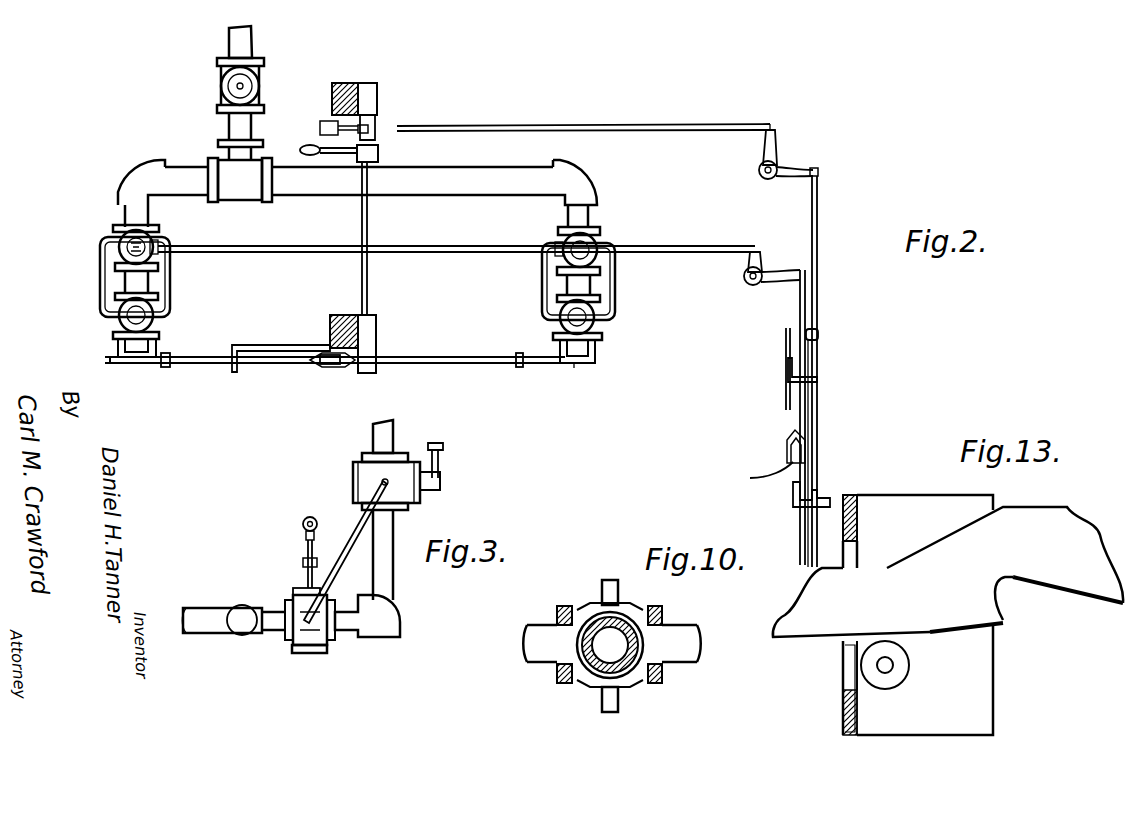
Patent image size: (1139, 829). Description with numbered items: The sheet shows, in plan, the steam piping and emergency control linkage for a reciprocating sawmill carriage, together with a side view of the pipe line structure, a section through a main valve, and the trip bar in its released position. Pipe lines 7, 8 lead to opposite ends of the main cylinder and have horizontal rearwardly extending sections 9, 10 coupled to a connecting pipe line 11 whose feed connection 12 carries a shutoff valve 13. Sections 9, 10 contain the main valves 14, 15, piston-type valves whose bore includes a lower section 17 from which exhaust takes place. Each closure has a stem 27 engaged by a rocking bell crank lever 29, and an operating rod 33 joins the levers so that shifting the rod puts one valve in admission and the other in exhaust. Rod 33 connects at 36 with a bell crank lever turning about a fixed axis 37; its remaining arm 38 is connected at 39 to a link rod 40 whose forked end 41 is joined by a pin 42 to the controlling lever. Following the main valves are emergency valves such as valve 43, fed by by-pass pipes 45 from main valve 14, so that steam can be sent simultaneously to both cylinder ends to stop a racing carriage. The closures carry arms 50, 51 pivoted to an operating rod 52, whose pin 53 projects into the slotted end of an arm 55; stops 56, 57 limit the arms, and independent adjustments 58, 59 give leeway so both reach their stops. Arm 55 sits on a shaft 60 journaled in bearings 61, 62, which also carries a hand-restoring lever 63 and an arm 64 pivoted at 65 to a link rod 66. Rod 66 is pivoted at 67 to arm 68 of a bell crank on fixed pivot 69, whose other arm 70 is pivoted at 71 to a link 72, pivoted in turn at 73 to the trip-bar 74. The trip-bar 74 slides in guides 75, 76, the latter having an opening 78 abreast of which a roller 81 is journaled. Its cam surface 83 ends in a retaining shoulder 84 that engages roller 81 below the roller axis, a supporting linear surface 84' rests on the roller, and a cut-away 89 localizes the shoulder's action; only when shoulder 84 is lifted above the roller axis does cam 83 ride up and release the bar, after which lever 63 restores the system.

In FIG. 2, the pipe line 7 is at (118, 318).
In FIG. 3, the pipe line 7 is at (395, 433).
In FIG. 2, the pipe line 8 is at (600, 325).
In FIG. 2, the horizontal rearwardly extending section 9 is at (128, 212).
In FIG. 3, the horizontal rearwardly extending section 9 is at (273, 628).
In FIG. 10, the horizontal rearwardly extending section 9 is at (540, 648).
In FIG. 2, the horizontal rearwardly extending section 10 is at (590, 220).
In FIG. 3, the connecting pipe line 11 is at (248, 630).
In FIG. 2, the feed connection 12 is at (240, 125).
In FIG. 3, the feed connection 12 is at (212, 612).
In FIG. 2, the shutoff valve 13 is at (251, 90).
In FIG. 2, the main valve 14 is at (110, 247).
In FIG. 3, the main valve 14 is at (312, 653).
In FIG. 10, the main valve 14 is at (578, 678).
In FIG. 2, the main valve 15 is at (600, 242).
In FIG. 2, the lower section of cylindrical bore 17 is at (490, 162).
In FIG. 3, the valve stem 27 is at (306, 580).
In FIG. 3, the rocking bell crank lever 29 is at (305, 560).
In FIG. 2, the operating rod 33 is at (490, 244).
In FIG. 3, the operating rod 33 is at (303, 522).
In FIG. 2, the connection of rod 33 to bell crank lever 36 is at (755, 252).
In FIG. 2, the fixed axis 37 is at (745, 282).
In FIG. 2, the remaining arm of bell crank lever 38 is at (778, 283).
In FIG. 2, the connection of arm 38 to link 40 39 is at (805, 272).
In FIG. 2, the link rod 40 is at (796, 312).
In FIG. 2, the forked end 41 is at (788, 448).
In FIG. 2, the pin 42 is at (750, 478).
In FIG. 3, the emergency valve 43 is at (353, 473).
In FIG. 2, the by-pass pipe 45 is at (100, 290).
In FIG. 3, the by-pass pipe 45 is at (360, 510).
In FIG. 10, the by-pass pipe 45 is at (620, 592).
In FIG. 2, the arm 50 is at (108, 350).
In FIG. 3, the arm 50 is at (448, 468).
In FIG. 2, the arm 51 is at (576, 364).
In FIG. 2, the operating rod 52 is at (305, 364).
In FIG. 3, the operating rod 52 is at (440, 445).
In FIG. 2, the pin 53 is at (330, 366).
In FIG. 2, the arm 55 is at (332, 363).
In FIG. 2, the stop 56 is at (112, 342).
In FIG. 2, the stop 57 is at (552, 348).
In FIG. 2, the independent adjustment 58 is at (164, 367).
In FIG. 2, the independent adjustment 59 is at (512, 373).
In FIG. 2, the shaft 60 is at (368, 298).
In FIG. 2, the bearing 61 is at (378, 328).
In FIG. 2, the bearing 62 is at (378, 98).
In FIG. 2, the hand-restoring lever 63 is at (342, 155).
In FIG. 2, the arm 64 is at (368, 128).
In FIG. 2, the pivot 65 is at (330, 121).
In FIG. 2, the link rod 66 is at (535, 126).
In FIG. 2, the pivot 67 is at (770, 124).
In FIG. 2, the arm of bell crank lever 68 is at (765, 148).
In FIG. 2, the fixed pivot 69 is at (760, 175).
In FIG. 2, the arm of bell crank lever 70 is at (797, 168).
In FIG. 2, the pivot 71 is at (818, 170).
In FIG. 2, the link 72 is at (818, 216).
In FIG. 2, the pivot 73 is at (818, 336).
In FIG. 2, the trip-bar 74 is at (816, 362).
In FIG. 13, the trip-bar 74 is at (1090, 535).
In FIG. 2, the guide 75 is at (820, 380).
In FIG. 2, the guide 76 is at (795, 503).
In FIG. 13, the guide 76 is at (900, 495).
In FIG. 13, the opening 78 is at (848, 668).
In FIG. 13, the roller 81 is at (909, 665).
In FIG. 13, the cam surface 83 is at (940, 630).
In FIG. 13, the retaining shoulder 84 is at (966, 615).
In FIG. 13, the supporting linear surface 84' is at (1068, 570).
In FIG. 13, the cut-away 89 is at (1000, 595).